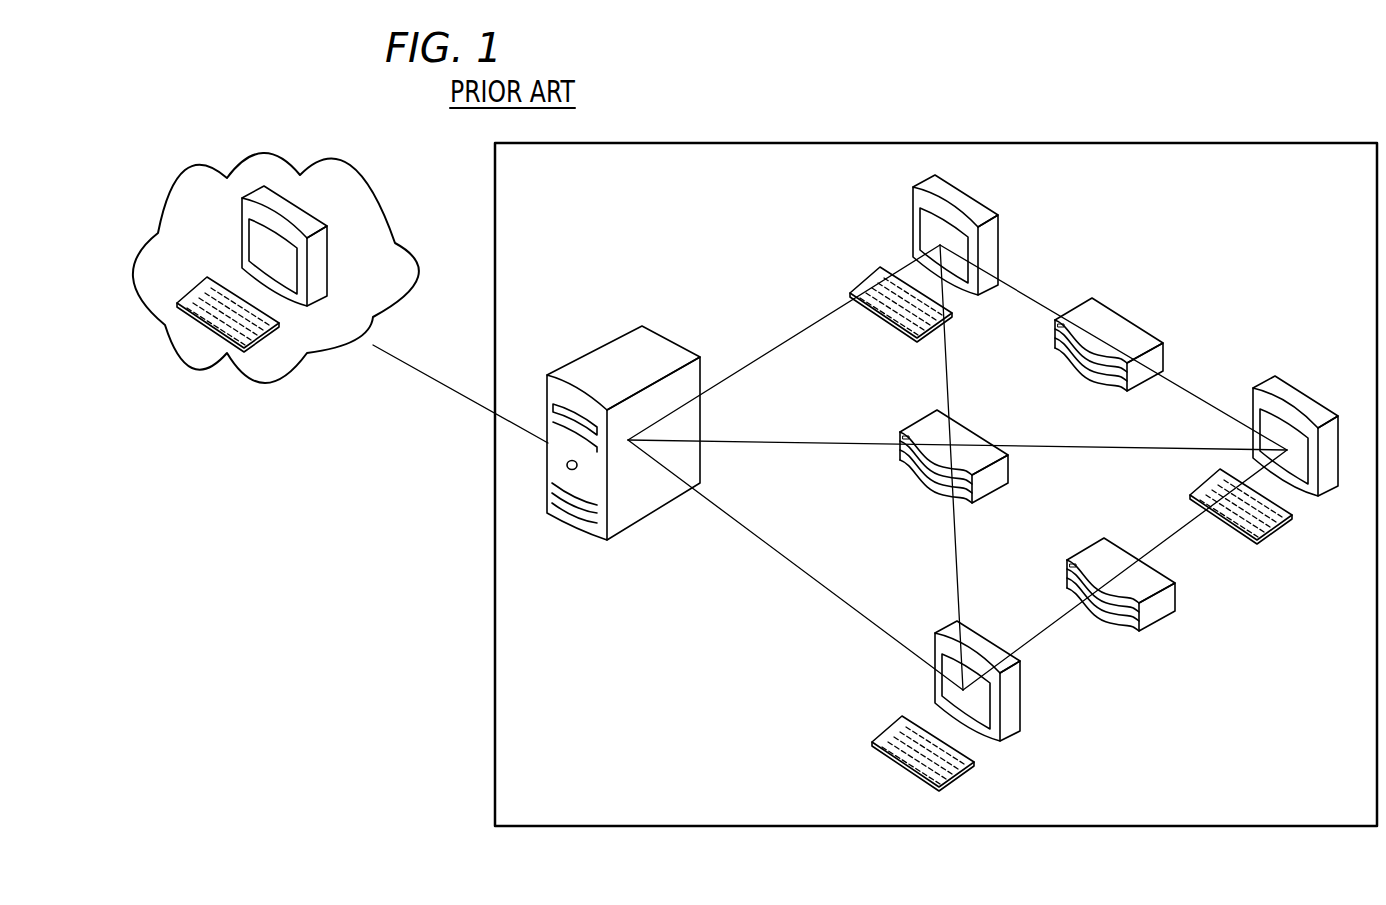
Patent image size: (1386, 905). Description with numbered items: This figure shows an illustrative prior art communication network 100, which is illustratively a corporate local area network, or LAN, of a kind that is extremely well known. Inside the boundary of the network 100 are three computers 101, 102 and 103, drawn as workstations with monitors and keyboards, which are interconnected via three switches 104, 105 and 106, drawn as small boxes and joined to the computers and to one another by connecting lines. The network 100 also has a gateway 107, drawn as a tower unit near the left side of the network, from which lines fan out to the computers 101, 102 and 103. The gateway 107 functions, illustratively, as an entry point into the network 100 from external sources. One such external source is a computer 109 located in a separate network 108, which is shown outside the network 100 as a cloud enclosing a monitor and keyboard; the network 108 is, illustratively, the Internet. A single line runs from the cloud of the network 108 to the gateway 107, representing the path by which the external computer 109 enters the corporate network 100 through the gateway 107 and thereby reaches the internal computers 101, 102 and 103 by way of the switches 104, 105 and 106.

The communication network 100 is at (876, 122).
The computer 101 is at (973, 203).
The computer 102 is at (1302, 403).
The computer 103 is at (1010, 710).
The switch 104 is at (923, 425).
The switch 105 is at (1117, 323).
The switch 106 is at (1158, 608).
The gateway 107 is at (612, 363).
The network 108 is at (196, 170).
The computer 109 is at (297, 210).